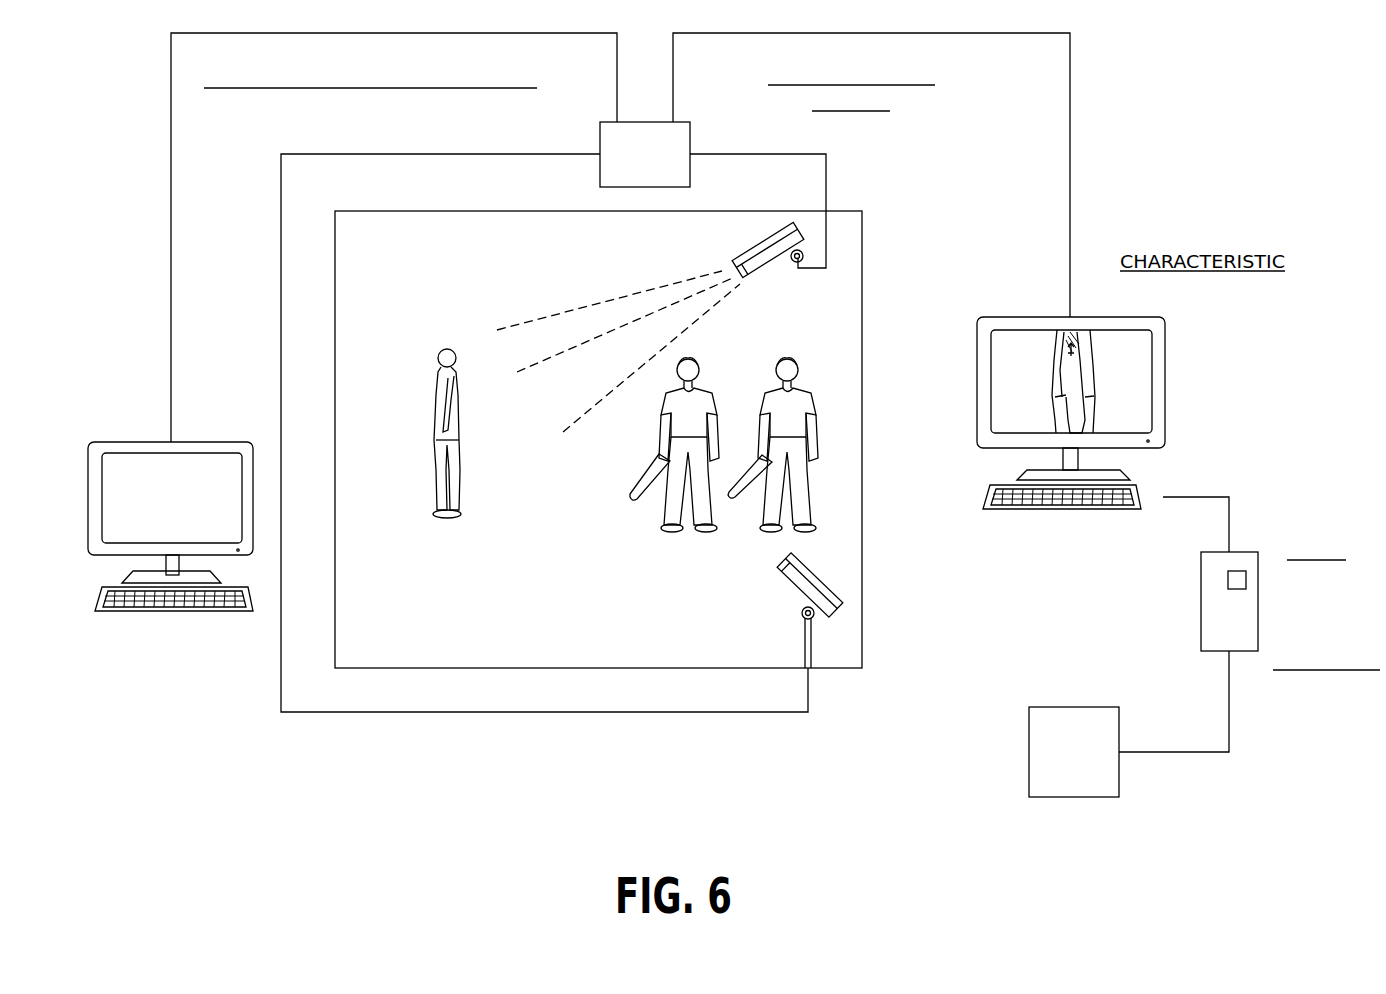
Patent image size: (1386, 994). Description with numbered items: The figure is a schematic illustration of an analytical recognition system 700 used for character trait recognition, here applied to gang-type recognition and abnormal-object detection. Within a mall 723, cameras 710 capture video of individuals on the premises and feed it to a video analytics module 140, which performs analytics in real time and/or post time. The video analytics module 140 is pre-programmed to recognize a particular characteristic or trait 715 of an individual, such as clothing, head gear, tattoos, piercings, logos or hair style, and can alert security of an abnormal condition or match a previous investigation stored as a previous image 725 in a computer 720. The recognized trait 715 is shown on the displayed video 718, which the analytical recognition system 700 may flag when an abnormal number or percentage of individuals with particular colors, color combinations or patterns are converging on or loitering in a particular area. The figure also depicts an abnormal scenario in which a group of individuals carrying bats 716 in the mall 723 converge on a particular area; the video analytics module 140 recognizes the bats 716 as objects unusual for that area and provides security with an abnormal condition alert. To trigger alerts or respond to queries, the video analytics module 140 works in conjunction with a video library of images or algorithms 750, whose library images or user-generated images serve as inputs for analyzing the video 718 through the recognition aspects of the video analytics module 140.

The analytical recognition system 700 is at (322, 131).
The video analytics module 140 is at (683, 122).
The camera 710 is at (805, 246).
The characteristic or trait 715 is at (1085, 332).
The bat 716 is at (630, 492).
The video 718 is at (1119, 366).
The computer 720 is at (1243, 628).
The mall 723 is at (330, 645).
The previous image 725 is at (1247, 578).
The video library of images or algorithms 750 is at (1088, 797).